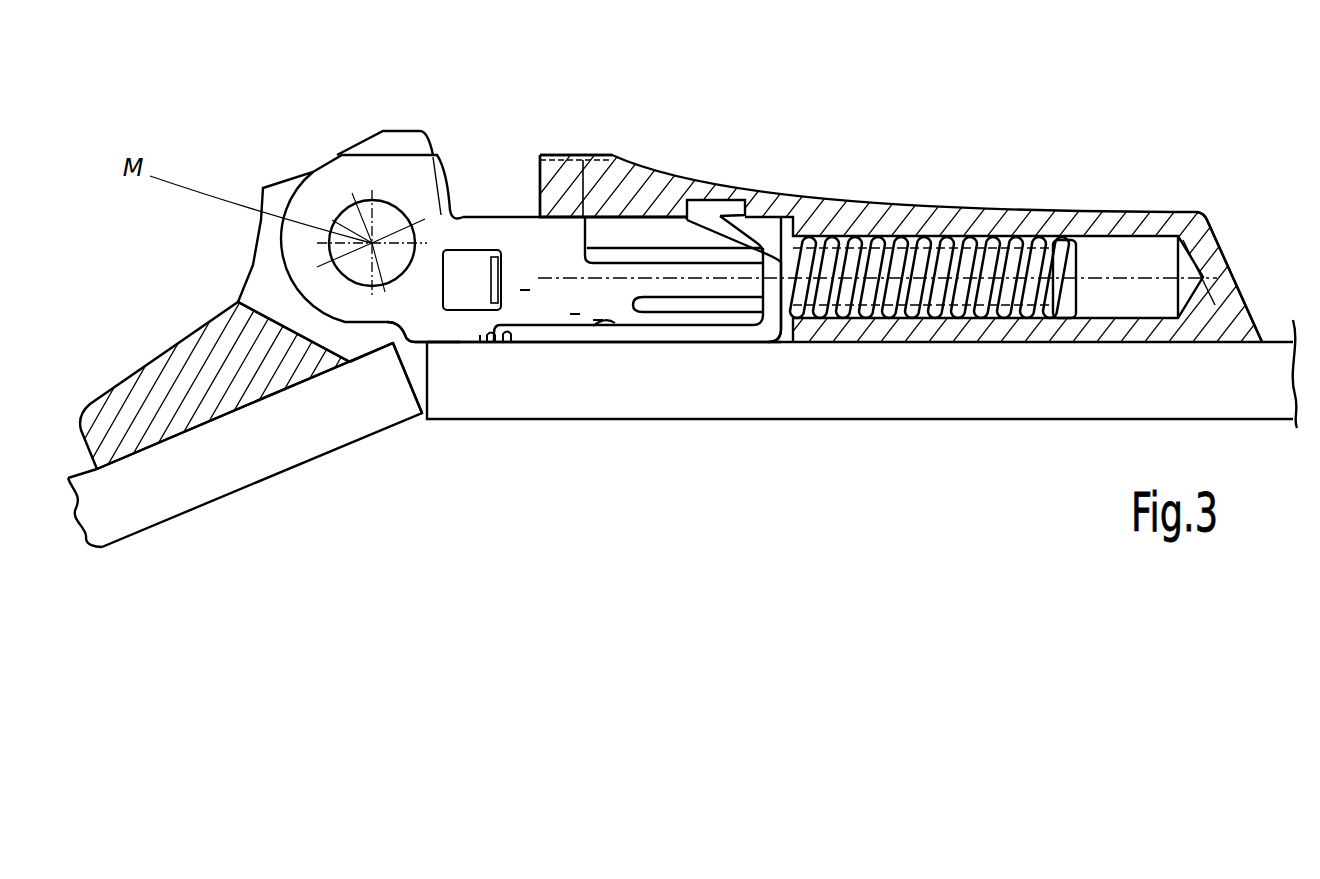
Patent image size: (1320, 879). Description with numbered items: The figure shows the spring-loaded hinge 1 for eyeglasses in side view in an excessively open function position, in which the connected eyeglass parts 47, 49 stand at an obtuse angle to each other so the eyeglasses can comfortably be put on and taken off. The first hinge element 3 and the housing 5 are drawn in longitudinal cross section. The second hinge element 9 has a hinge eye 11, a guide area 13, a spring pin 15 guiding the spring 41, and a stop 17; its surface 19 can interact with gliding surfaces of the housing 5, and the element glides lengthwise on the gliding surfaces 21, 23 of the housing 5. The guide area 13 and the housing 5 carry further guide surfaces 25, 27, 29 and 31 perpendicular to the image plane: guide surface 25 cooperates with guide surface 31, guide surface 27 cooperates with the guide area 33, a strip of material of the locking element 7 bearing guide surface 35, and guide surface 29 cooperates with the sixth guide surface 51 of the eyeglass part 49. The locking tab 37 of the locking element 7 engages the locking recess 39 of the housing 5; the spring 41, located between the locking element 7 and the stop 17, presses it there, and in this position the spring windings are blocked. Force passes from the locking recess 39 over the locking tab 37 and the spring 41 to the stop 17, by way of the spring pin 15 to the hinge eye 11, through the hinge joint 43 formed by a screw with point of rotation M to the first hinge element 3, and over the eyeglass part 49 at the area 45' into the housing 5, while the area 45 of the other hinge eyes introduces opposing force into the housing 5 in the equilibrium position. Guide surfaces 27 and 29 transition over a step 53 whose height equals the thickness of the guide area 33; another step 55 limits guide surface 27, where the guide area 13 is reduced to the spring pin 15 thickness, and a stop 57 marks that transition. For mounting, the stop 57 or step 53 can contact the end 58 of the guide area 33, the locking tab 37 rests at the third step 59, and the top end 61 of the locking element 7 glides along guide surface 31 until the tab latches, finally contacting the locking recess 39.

The spring-loaded hinge 1 is at (1236, 177).
The first hinge element 3 is at (188, 338).
The housing 5 is at (1134, 206).
The locking element 7 is at (748, 332).
The second hinge element 9 is at (313, 158).
The hinge eye 11 is at (340, 288).
The guide area 13 is at (537, 253).
The spring pin 15 is at (810, 237).
The stop 17 is at (1063, 240).
The surface 19 is at (513, 345).
The gliding surface 21 is at (640, 236).
The gliding surface 23 is at (665, 310).
The guide surface 25 is at (487, 213).
The second guide surface 27 is at (524, 292).
The third guide surface 29 is at (432, 348).
The fourth guide surface 31 is at (630, 238).
The guide area 33 is at (707, 337).
The fifth guide surface 35 is at (624, 323).
The locking tab 37 is at (787, 235).
The locking recess 39 is at (730, 212).
The spring 41 is at (945, 236).
The hinge joint 43 is at (383, 222).
The area 45 is at (386, 111).
The area 45' is at (384, 453).
The eyeglass part 47 is at (200, 465).
The eyeglass part 49 is at (1020, 378).
The sixth guide surface 51 is at (490, 350).
The step 53 is at (483, 345).
The step 55 is at (598, 320).
The stop 57 is at (673, 268).
The end 58 is at (575, 314).
The third step 59 is at (583, 232).
The top end 61 is at (735, 198).